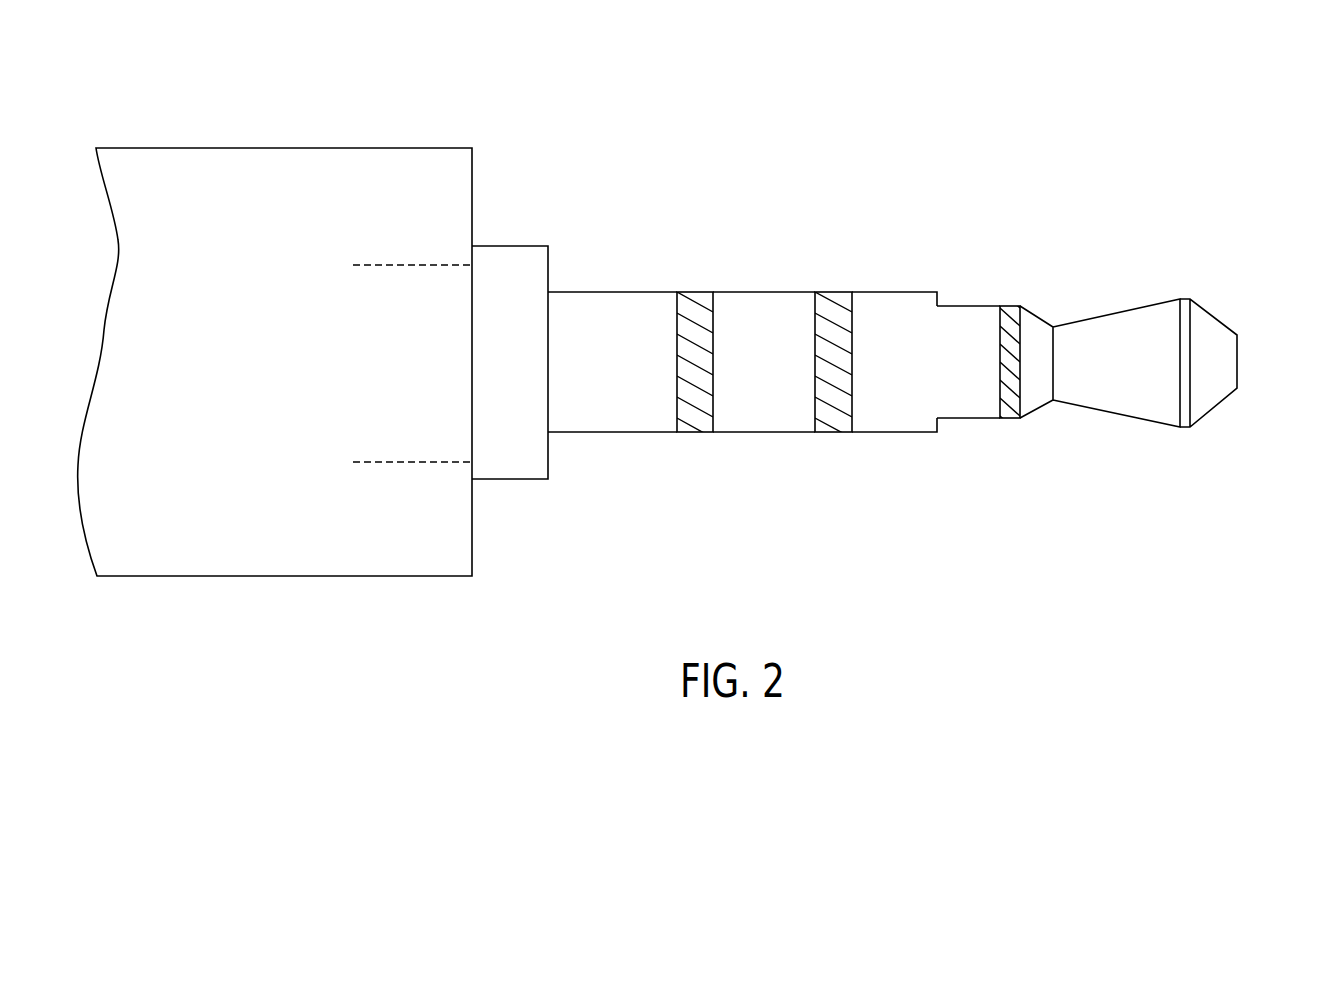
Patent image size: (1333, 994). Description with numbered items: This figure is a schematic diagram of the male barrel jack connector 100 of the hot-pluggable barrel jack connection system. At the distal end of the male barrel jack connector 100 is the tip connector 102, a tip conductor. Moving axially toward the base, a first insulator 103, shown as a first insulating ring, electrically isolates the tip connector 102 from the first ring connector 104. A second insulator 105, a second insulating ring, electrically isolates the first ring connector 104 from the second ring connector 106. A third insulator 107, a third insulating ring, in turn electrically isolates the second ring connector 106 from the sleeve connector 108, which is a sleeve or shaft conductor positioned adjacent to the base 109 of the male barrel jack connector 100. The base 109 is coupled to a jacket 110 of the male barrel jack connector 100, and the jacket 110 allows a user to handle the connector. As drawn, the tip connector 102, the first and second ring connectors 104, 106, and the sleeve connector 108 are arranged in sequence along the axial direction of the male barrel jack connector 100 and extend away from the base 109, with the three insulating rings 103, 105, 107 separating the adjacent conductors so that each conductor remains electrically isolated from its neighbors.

The male barrel jack connector 100 is at (1255, 123).
The tip connector 102 is at (1232, 362).
The first insulator 103 is at (1012, 413).
The first ring connector 104 is at (908, 298).
The second insulator 105 is at (833, 427).
The second ring connector 106 is at (750, 298).
The third insulator 107 is at (697, 427).
The sleeve connector 108 is at (603, 298).
The base 109 is at (508, 253).
The jacket 110 is at (353, 570).